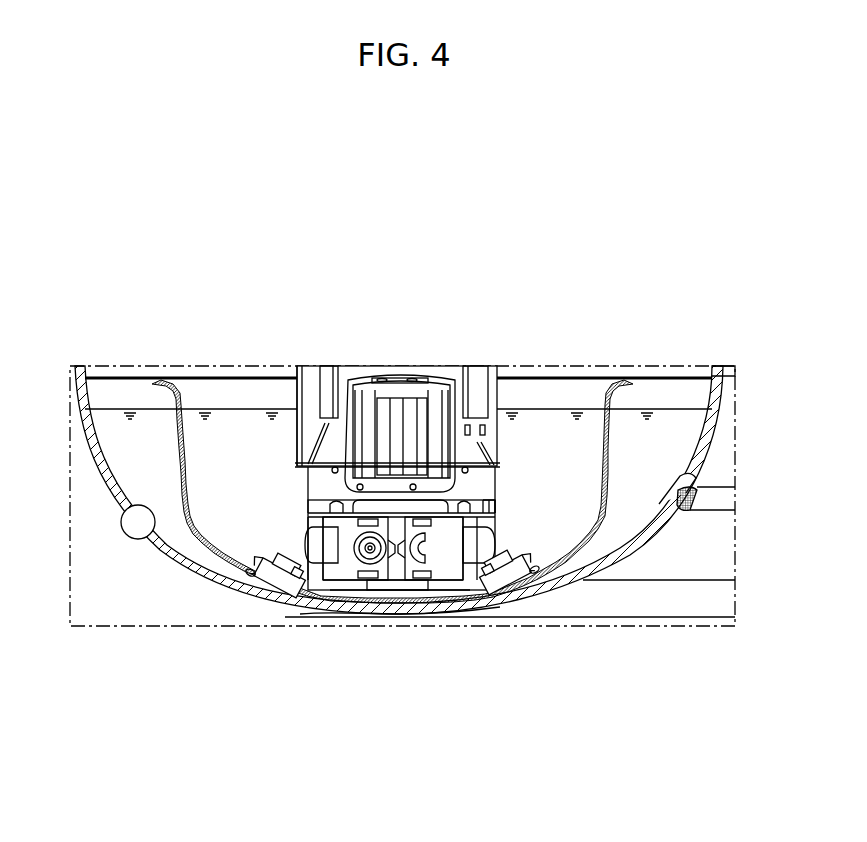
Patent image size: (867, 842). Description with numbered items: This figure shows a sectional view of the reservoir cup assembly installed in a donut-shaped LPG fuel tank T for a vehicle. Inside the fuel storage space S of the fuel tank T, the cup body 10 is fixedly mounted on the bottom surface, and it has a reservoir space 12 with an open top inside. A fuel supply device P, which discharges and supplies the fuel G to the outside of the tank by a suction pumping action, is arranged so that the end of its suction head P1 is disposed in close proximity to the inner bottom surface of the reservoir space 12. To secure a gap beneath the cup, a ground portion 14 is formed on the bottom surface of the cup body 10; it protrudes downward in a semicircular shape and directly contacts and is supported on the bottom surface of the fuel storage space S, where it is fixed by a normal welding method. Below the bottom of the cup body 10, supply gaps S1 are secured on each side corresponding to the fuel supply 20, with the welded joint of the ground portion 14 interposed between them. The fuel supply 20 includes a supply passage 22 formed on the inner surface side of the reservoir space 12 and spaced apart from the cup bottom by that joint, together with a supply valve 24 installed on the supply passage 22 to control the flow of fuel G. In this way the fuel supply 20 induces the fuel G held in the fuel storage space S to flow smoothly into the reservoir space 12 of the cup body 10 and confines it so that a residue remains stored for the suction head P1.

The cup body 10 is at (523, 368).
The reservoir space 12 is at (563, 388).
The fuel G is at (665, 407).
The fuel tank T is at (98, 492).
The fuel storage space S is at (153, 540).
The supply gap S1 is at (217, 565).
The ground portion for securing a gap 14 is at (392, 614).
The fuel supply device P is at (363, 436).
The suction head P1 is at (360, 546).
The fuel supply 20 is at (391, 636).
The supply passage 22 is at (288, 596).
The supply valve 24 is at (272, 584).